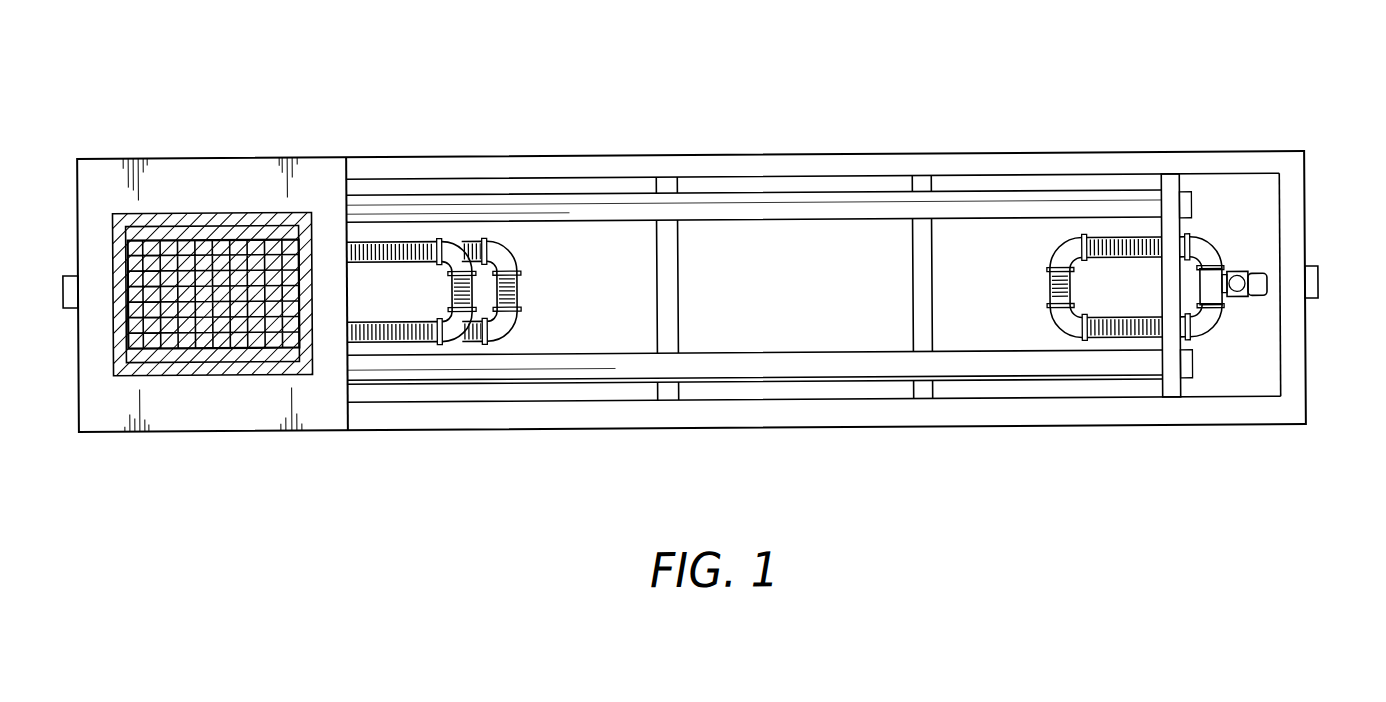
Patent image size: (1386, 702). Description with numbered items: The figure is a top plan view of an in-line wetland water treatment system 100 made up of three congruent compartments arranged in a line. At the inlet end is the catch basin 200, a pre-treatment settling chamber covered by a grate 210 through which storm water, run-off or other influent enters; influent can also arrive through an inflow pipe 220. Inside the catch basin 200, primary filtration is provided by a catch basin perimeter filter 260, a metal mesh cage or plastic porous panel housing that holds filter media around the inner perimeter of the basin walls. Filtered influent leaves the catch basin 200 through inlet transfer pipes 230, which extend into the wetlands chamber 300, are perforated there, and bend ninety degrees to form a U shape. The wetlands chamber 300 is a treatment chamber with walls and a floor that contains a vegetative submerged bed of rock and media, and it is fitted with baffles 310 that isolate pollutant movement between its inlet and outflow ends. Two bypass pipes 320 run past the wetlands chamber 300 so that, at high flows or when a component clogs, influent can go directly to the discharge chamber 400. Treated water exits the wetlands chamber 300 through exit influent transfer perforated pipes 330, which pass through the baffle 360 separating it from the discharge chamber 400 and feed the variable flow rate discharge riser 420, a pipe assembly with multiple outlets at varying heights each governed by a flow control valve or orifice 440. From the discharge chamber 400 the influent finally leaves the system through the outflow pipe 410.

The in-line wetland water treatment system 100 is at (1297, 87).
The catch basin 200 is at (347, 452).
The grate 210 is at (152, 250).
The inflow pipe 220 is at (64, 297).
The inlet transfer pipes 230 is at (474, 238).
The catch basin perimeter filter 260 is at (213, 210).
The wetlands chamber 300 is at (355, 451).
The baffles 310 is at (665, 392).
The bypass pipes 320 is at (1033, 206).
The exit influent transfer perforated pipes 330 is at (1099, 239).
The baffle 360 is at (1174, 180).
The discharge chamber 400 is at (1293, 450).
The outflow pipe 410 is at (1318, 266).
The variable flow rate discharge riser 420 is at (1211, 281).
The flow control valve and/or flow control orifice 440 is at (1238, 287).